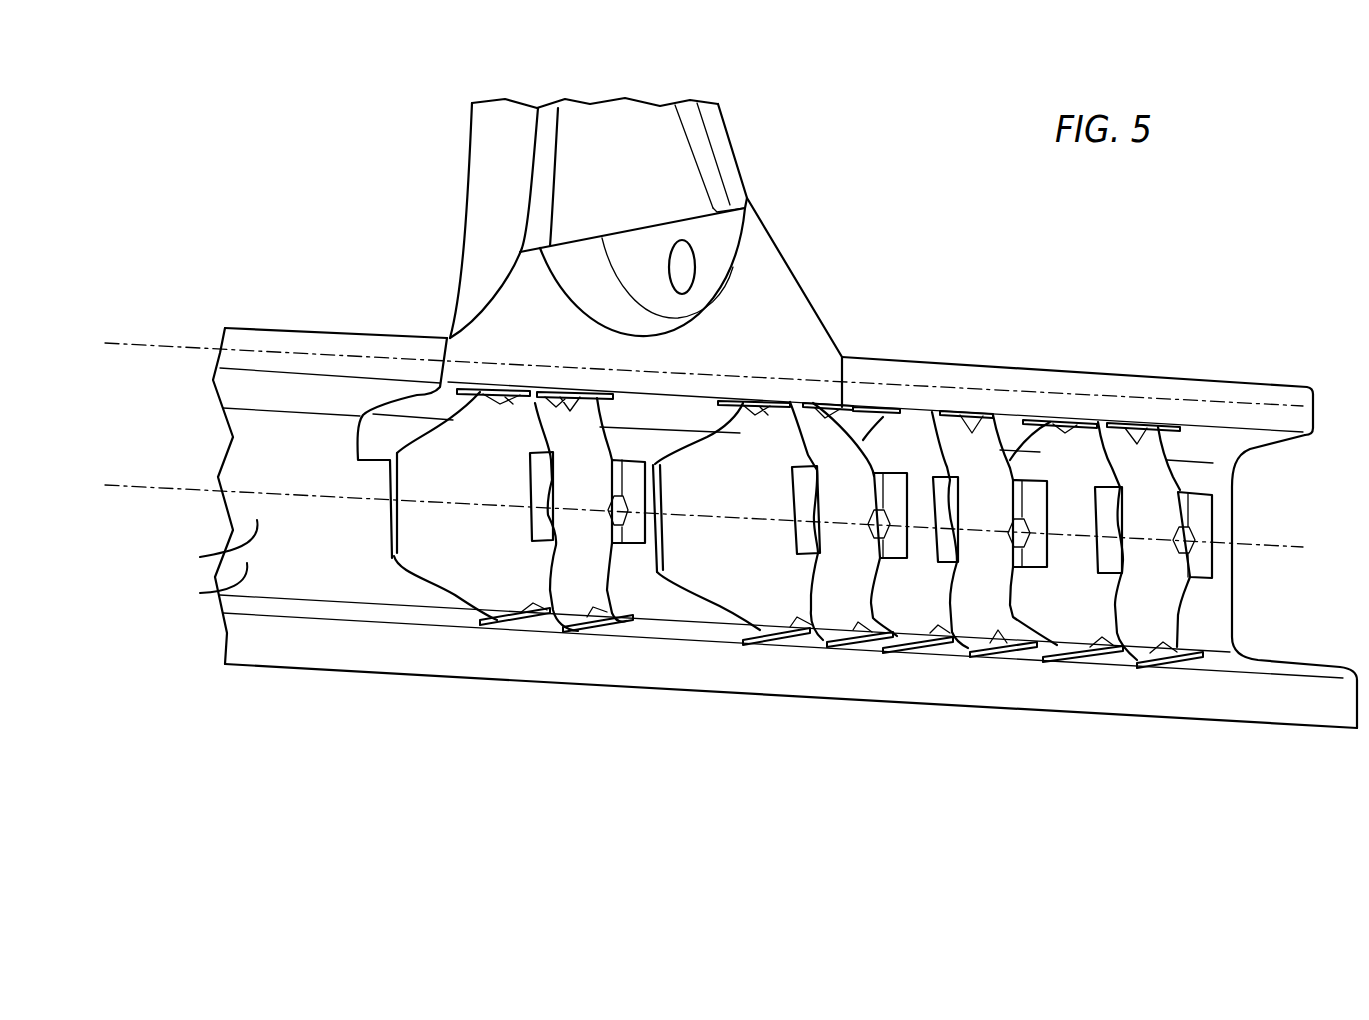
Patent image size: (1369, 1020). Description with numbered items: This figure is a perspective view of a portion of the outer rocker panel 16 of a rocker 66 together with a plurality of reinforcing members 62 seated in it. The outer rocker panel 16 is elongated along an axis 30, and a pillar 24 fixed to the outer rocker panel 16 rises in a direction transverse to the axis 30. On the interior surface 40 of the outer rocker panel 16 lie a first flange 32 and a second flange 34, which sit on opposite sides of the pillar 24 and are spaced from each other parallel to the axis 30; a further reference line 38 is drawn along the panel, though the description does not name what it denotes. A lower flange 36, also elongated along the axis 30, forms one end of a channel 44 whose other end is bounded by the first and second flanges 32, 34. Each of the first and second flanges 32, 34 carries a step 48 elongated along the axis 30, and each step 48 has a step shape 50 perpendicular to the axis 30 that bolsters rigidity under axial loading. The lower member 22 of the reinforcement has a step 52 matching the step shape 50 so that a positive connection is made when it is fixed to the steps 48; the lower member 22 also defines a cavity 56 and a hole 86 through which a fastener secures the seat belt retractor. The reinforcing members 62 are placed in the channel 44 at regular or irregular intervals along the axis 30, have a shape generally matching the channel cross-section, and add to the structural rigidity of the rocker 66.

The outer rocker panel 16 is at (197, 590).
The lower member 22 is at (762, 292).
The pillar 24 is at (645, 152).
The axis 30 is at (120, 488).
The first flange 32 is at (1035, 368).
The second flange 34 is at (298, 328).
The lower flange 36 is at (333, 650).
The engine axis 38 is at (152, 338).
The interior surface 40 is at (213, 545).
The channel 44 is at (303, 577).
The step 48 is at (206, 360).
The step shape 50 is at (1307, 435).
The step of the reinforcement 52 is at (433, 388).
The cavity 56 is at (540, 250).
The reinforcing members 62 is at (512, 595).
The rocker 66 is at (239, 693).
The hole 86 is at (670, 278).